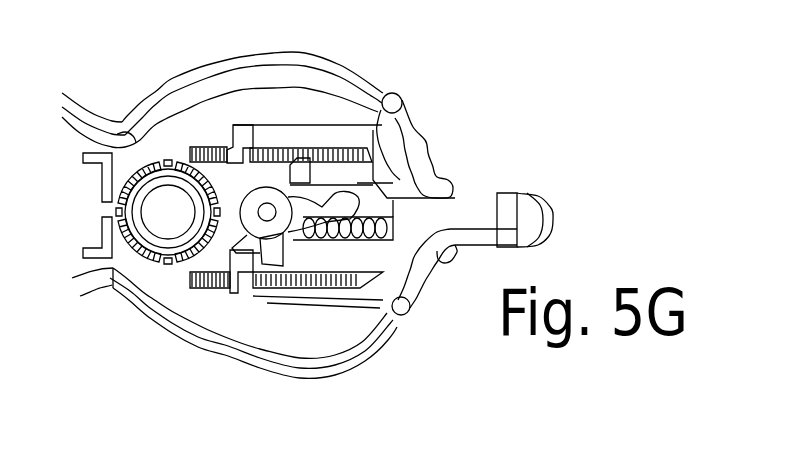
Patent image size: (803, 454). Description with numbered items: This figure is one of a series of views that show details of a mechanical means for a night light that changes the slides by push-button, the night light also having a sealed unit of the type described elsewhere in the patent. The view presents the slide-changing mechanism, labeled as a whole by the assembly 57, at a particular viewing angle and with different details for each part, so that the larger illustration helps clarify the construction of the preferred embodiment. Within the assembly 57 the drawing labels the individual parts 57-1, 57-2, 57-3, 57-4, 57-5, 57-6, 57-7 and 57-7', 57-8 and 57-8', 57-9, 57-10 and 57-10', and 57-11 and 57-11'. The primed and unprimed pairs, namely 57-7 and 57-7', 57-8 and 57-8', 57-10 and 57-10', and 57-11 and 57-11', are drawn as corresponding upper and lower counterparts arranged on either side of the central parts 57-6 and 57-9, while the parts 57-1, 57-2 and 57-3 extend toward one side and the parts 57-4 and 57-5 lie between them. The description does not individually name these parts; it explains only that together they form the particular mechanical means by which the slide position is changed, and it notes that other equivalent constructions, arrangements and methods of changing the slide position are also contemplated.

The tensioning assembly housing 57 is at (130, 300).
The knob 57-1 is at (534, 204).
The arm 57-2 is at (465, 198).
The spring housing 57-3 is at (390, 224).
The spring 57-4 is at (328, 214).
The upper rack 57-5 is at (298, 170).
The lever 57-6 is at (273, 258).
The upper carrier block 57-7 is at (204, 88).
The lower carrier block 57-7' is at (190, 340).
The upper toothed rack 57-8 is at (176, 107).
The lower toothed rack 57-8' is at (163, 334).
The hub 57-9 is at (167, 210).
The upper pawl 57-10 is at (441, 138).
The lower pawl 57-10' is at (439, 302).
The upper plate 57-11 is at (344, 130).
The lower plate 57-11' is at (318, 342).